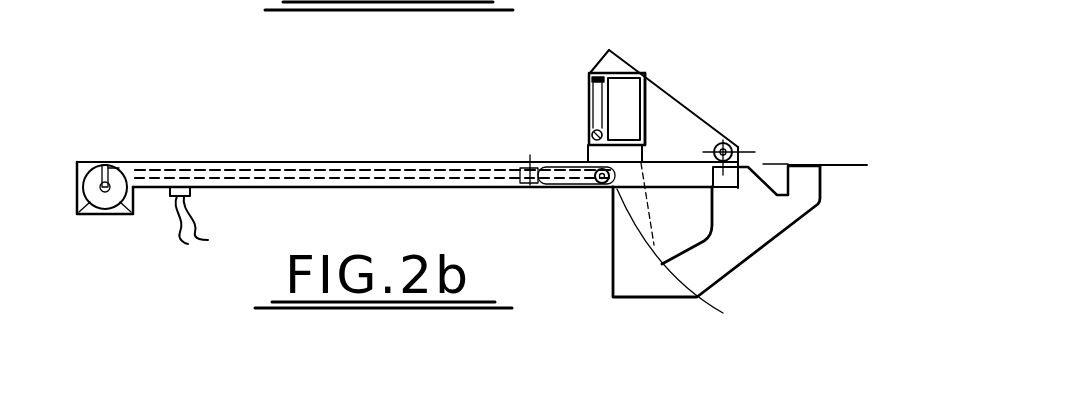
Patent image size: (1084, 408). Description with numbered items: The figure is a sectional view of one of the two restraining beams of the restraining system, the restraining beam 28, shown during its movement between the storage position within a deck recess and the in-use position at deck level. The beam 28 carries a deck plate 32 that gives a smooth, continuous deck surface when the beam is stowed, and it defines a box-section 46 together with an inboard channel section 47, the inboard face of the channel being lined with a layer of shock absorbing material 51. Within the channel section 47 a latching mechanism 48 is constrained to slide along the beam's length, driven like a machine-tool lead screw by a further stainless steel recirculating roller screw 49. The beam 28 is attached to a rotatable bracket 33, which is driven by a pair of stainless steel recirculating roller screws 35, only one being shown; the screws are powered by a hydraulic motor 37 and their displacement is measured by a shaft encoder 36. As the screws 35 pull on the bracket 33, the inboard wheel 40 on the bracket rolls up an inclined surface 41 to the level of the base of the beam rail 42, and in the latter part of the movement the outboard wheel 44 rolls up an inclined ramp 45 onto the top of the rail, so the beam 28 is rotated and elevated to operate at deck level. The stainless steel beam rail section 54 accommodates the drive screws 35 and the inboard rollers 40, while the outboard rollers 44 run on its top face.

The restraining beam 28 is at (648, 77).
The deck plate 32 is at (682, 98).
The rotatable bracket 33 is at (688, 135).
The recirculating roller screw 35 is at (308, 170).
The shaft encoder 36 is at (167, 198).
The hydraulic motor 37 is at (103, 166).
The inboard wheel 40 is at (598, 192).
The inclined surface 41 is at (641, 222).
The beam rail 42 is at (453, 168).
The outboard wheel 44 is at (738, 148).
The inclined ramp 45 is at (770, 166).
The box-section 46 is at (625, 78).
The inboard channel section 47 is at (595, 72).
The latching mechanism 48 is at (587, 97).
The recirculating roller screw 49 is at (592, 130).
The shock absorbing material 51 is at (590, 80).
The beam rail section 54 is at (375, 162).